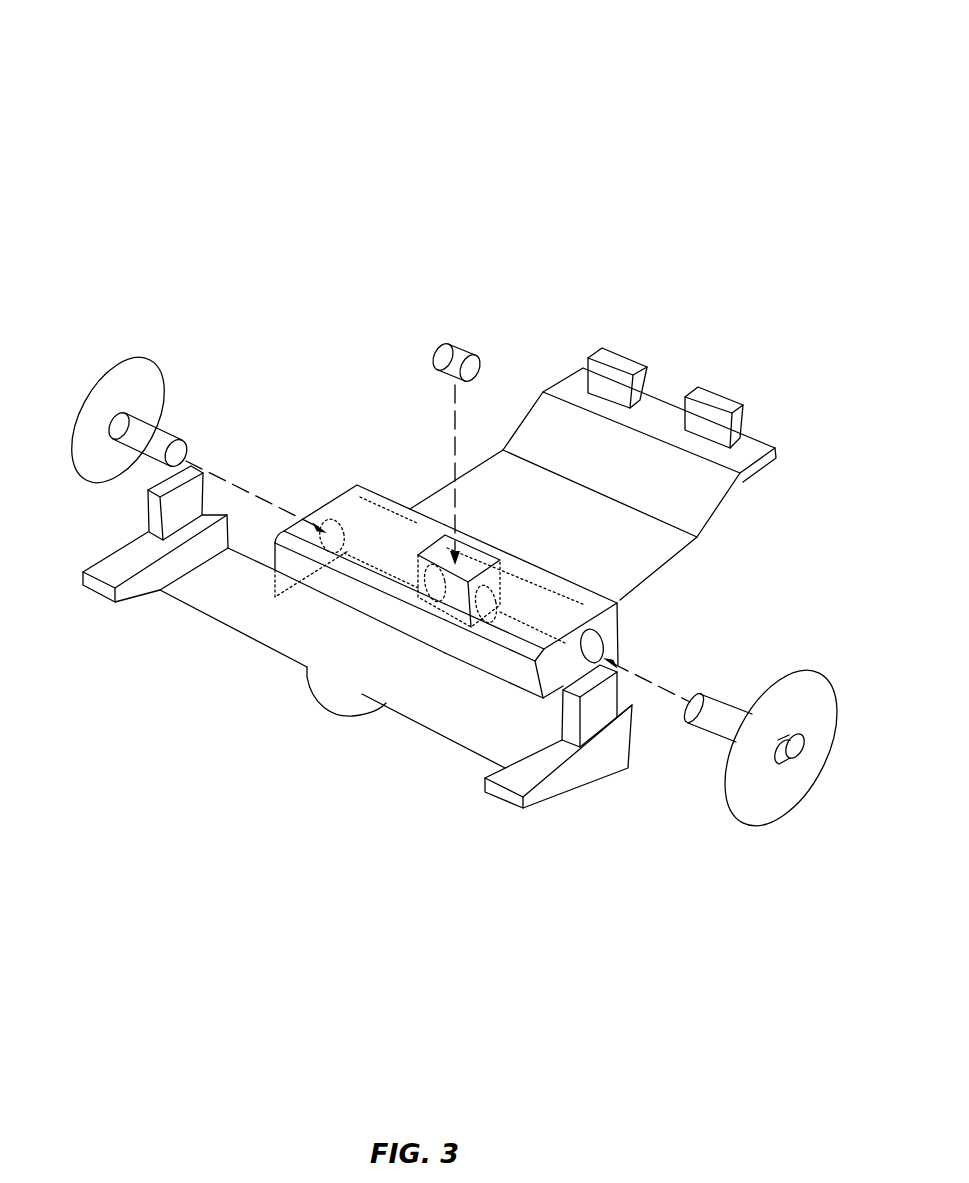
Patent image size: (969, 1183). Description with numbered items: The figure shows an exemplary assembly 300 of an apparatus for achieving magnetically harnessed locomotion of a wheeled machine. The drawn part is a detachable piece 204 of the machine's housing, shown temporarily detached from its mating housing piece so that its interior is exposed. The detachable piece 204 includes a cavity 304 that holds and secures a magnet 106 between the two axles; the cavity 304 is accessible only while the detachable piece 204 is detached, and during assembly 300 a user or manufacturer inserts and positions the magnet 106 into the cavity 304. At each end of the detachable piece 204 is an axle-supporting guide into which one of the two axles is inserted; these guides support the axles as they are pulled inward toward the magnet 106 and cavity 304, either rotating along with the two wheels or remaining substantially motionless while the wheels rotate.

The assembly 300 is at (122, 98).
The cavity 304 is at (433, 542).
The magnet 106 is at (466, 350).
The detachable piece 204 is at (522, 810).